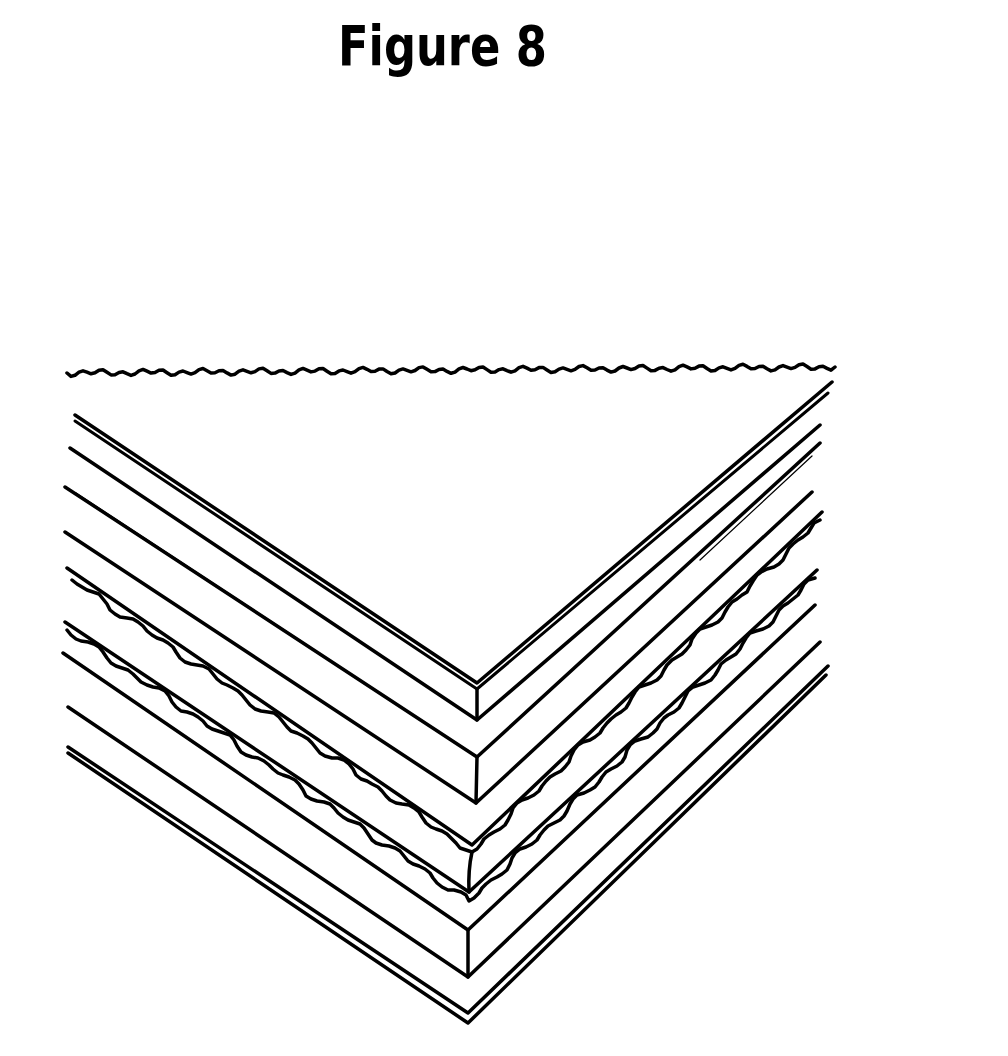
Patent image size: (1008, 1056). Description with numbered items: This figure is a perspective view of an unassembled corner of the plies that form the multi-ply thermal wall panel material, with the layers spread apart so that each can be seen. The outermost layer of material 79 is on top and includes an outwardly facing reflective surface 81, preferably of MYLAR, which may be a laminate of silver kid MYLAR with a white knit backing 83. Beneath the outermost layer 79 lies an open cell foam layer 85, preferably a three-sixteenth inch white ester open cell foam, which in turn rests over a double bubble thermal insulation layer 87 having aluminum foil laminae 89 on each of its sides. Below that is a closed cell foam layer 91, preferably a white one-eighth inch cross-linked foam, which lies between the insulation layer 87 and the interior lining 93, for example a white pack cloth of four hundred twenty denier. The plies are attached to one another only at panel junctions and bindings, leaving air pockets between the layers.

The outermost layer of material 79 is at (540, 418).
The outwardly facing reflective surface 81 is at (818, 408).
The white knit backing 83 is at (788, 438).
The open cell foam layer 85 is at (788, 482).
The double bubble thermal insulation layer 87 is at (772, 590).
The aluminum foil laminae 89 is at (790, 553).
The closed cell foam layer 91 is at (752, 682).
The interior lining 93 is at (758, 718).